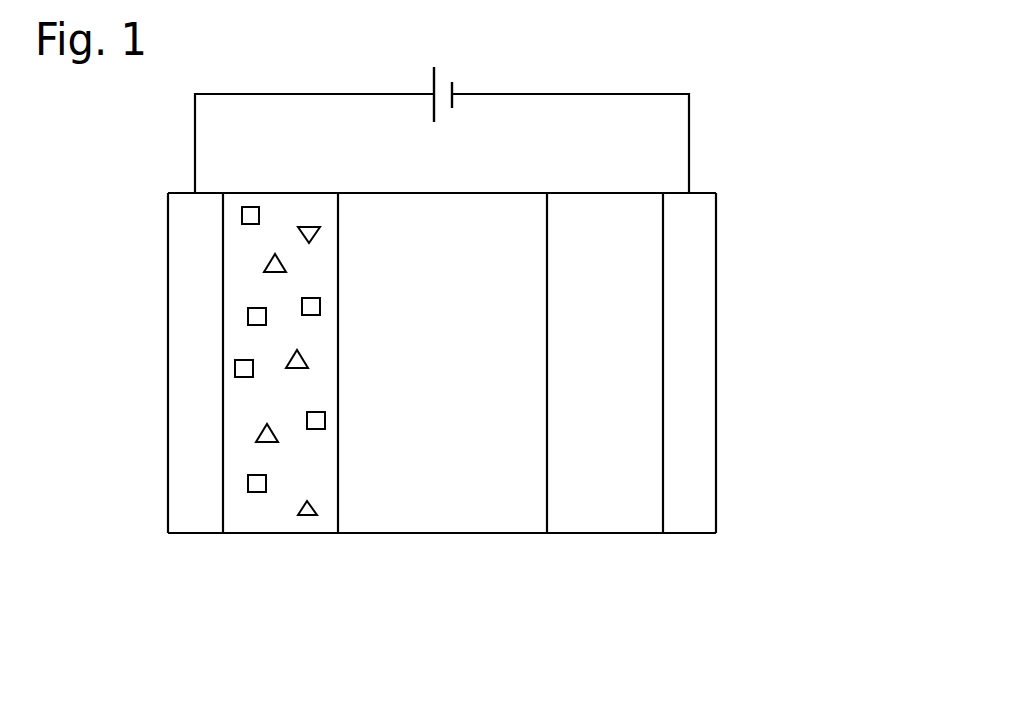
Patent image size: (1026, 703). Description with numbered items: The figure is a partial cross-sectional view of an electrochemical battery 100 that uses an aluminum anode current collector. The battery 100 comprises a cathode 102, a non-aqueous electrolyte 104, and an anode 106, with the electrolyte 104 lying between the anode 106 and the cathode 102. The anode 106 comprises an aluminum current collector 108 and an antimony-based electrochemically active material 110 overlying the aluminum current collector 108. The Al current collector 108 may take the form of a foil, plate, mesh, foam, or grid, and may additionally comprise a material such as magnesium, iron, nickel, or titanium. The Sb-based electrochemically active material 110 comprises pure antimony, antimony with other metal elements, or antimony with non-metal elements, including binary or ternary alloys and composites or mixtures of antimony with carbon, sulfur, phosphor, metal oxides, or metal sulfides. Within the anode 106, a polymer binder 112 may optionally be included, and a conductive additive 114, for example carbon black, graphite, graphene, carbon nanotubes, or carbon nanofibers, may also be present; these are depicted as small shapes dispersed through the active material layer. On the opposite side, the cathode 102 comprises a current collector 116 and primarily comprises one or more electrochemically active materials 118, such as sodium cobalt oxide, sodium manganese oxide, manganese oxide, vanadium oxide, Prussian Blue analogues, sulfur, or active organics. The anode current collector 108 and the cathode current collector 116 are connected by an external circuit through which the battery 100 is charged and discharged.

The battery 100 is at (755, 112).
The cathode 102 is at (771, 302).
The non-aqueous electrolyte 104 is at (465, 408).
The anode 106 is at (134, 337).
The aluminum current collector 108 is at (192, 520).
The Sb-based electrochemically active material 110 is at (280, 510).
The polymer binder 112 is at (319, 506).
The conductive additive 114 is at (253, 206).
The current collector 116 is at (693, 453).
The electrochemically active materials 118 is at (595, 520).